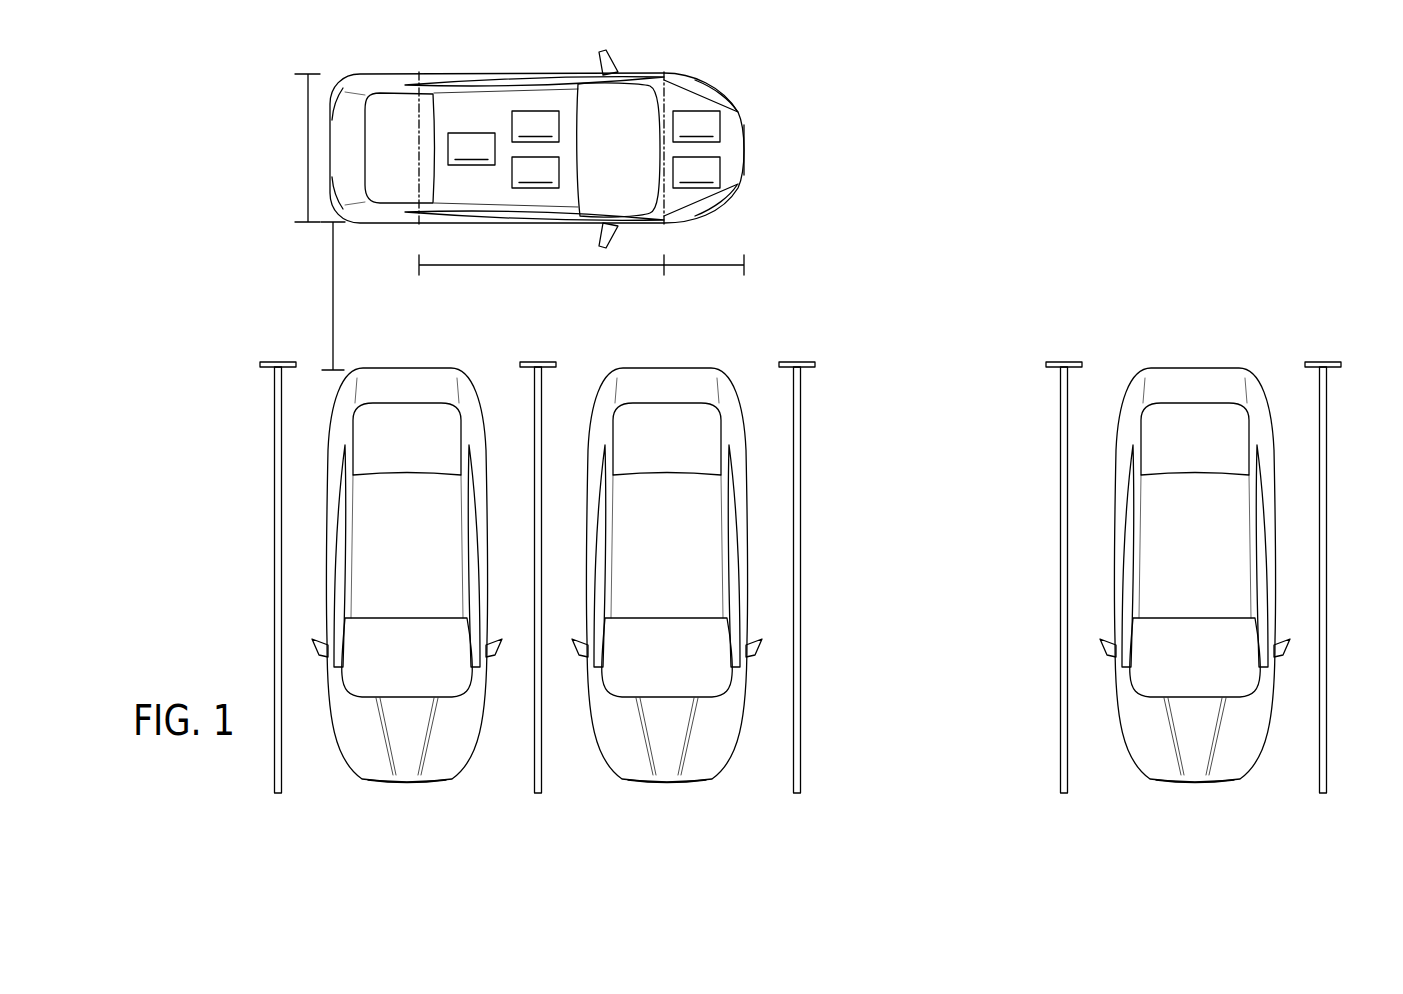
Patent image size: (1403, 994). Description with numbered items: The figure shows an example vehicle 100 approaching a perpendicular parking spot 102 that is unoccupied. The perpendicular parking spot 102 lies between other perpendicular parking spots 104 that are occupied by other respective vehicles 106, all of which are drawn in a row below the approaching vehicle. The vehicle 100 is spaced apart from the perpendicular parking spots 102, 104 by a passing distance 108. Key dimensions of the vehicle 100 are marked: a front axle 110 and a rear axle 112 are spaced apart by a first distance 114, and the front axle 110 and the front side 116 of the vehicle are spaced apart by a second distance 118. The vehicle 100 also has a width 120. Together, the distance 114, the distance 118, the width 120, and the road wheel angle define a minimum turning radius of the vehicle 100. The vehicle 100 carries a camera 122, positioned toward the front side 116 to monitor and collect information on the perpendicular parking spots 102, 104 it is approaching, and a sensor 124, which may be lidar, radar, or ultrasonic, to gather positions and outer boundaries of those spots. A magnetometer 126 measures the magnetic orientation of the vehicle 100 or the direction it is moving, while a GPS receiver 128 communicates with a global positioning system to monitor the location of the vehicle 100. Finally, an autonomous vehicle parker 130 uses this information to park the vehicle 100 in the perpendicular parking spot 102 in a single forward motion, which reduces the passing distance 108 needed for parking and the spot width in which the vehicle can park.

The vehicle 100 is at (360, 68).
The perpendicular parking spot 102 is at (945, 792).
The perpendicular parking spots 104 is at (405, 792).
The vehicles 106 is at (433, 783).
The passing distance 108 is at (333, 298).
The front axle 110 is at (668, 205).
The rear axle 112 is at (420, 193).
The distance 114 is at (540, 265).
The front side 116 is at (745, 133).
The distance 118 is at (704, 265).
The width 120 is at (308, 148).
The camera 122 is at (696, 172).
The sensor 124 is at (696, 126).
The magnetometer 126 is at (535, 172).
The global positioning system (GPS) receiver 128 is at (535, 126).
The autonomous vehicle parker 130 is at (471, 149).